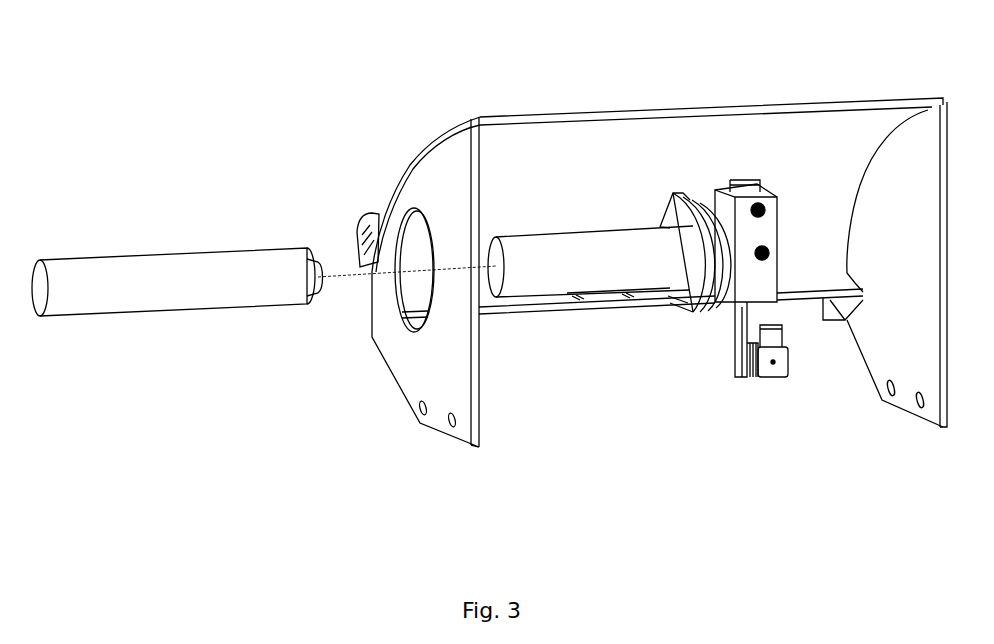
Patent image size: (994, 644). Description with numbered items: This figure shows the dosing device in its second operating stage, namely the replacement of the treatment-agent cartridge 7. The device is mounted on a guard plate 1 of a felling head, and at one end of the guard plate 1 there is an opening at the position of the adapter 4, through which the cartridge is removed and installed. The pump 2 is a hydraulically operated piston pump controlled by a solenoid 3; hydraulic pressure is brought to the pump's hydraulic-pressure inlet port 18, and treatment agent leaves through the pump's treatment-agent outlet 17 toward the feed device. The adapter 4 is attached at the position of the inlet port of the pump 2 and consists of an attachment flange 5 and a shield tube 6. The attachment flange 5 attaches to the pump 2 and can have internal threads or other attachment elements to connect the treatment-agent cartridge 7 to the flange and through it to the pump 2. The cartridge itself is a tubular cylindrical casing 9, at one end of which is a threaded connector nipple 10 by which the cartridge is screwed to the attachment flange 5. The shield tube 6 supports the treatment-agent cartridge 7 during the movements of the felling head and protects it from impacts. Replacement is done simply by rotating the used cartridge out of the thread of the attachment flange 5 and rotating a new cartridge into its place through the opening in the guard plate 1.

The guard plate 1 is at (793, 103).
The pump 2 is at (774, 250).
The solenoid 3 is at (762, 378).
The adapter 4 is at (663, 212).
The attachment flange 5 is at (710, 213).
The shield tube 6 is at (568, 275).
The treatment-agent cartridge 7 is at (173, 220).
The tubular cylindrical casing 9 is at (80, 258).
The threaded connector nipple 10 is at (305, 258).
The treatment-agent outlet 17 is at (763, 198).
The hydraulic-pressure inlet port 18 is at (770, 257).